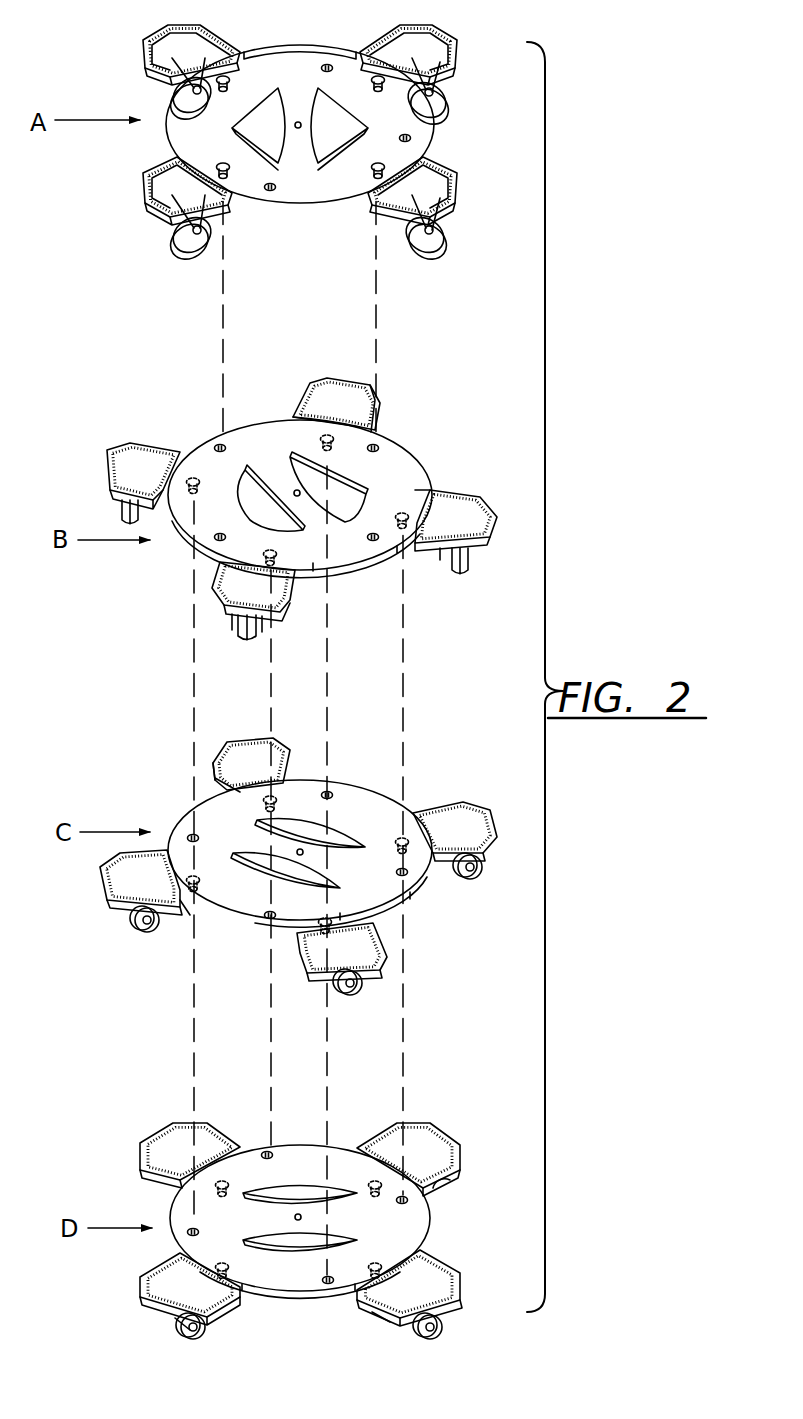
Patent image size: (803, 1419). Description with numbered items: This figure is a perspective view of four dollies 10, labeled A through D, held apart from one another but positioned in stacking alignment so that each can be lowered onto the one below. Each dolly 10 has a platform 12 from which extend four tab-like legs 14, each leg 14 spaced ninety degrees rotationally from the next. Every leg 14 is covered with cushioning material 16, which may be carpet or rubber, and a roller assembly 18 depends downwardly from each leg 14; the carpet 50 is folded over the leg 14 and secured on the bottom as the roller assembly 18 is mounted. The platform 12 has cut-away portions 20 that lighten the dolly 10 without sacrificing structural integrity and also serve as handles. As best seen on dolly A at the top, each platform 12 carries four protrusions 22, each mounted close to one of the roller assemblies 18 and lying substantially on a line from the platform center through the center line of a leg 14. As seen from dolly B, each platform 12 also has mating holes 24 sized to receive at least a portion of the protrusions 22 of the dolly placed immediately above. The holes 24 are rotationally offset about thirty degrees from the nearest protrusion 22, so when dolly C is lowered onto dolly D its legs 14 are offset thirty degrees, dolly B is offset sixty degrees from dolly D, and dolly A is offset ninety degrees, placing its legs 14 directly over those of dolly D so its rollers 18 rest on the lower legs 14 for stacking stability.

The dolly 10 is at (312, 8).
The platform 12 is at (435, 133).
The tab-like leg 14 is at (207, 32).
The cushioning material 16 is at (440, 493).
The roller assembly 18 is at (172, 238).
The cut-away portion 20 is at (337, 160).
The protrusion 22 is at (375, 78).
The mating hole 24 is at (225, 443).
The cushioning material 50 is at (150, 60).